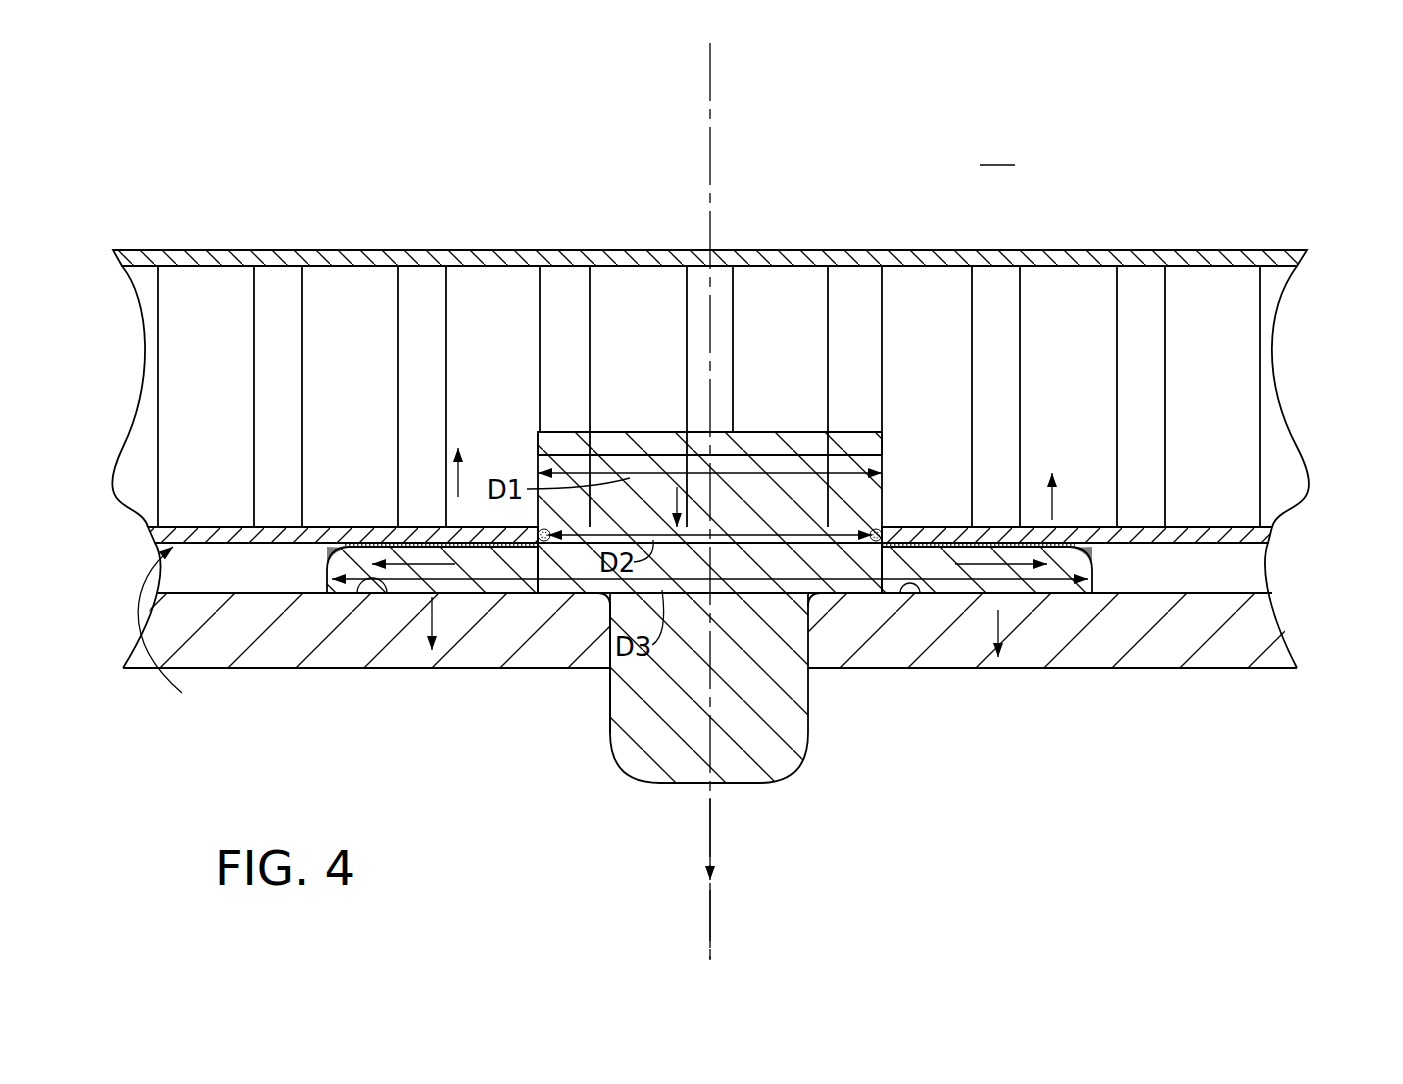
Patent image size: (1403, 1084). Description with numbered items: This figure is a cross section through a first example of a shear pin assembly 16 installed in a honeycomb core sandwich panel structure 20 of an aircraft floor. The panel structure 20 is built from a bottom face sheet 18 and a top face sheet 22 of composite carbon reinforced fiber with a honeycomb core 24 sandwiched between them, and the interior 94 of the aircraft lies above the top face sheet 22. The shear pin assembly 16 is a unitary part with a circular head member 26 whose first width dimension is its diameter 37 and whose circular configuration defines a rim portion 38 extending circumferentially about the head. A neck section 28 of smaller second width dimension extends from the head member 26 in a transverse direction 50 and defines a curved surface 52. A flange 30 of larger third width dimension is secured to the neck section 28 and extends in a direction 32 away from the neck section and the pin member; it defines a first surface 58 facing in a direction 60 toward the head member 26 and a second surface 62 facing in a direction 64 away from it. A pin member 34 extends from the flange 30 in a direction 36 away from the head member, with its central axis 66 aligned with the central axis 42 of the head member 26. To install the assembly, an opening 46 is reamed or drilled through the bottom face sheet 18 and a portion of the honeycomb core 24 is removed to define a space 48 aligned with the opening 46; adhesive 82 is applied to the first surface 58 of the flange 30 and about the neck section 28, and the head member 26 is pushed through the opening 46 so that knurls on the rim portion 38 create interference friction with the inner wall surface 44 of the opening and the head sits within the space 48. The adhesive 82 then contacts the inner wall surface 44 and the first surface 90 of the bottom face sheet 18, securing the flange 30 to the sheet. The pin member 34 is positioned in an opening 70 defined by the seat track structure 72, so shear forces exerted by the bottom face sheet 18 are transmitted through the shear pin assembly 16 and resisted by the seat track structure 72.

The shear pin assembly 16 is at (745, 600).
The bottom face sheet 18 is at (232, 545).
The honeycomb core sandwich panel structure 20 is at (1293, 340).
The top face sheet 22 is at (660, 257).
The honeycomb core 24 is at (353, 345).
The head member 26 is at (737, 443).
The neck section 28 is at (862, 532).
The flange 30 is at (372, 560).
The direction 32 is at (433, 547).
The pin member 34 is at (747, 742).
The direction 36 is at (709, 835).
The diameter 37 is at (645, 448).
The rim portion 38 is at (535, 435).
The central axis 42 is at (710, 144).
The inner wall surface 44 is at (546, 529).
The opening 46 is at (780, 527).
The space 48 is at (890, 455).
The transverse direction 50 is at (680, 520).
The curved surface 52 is at (553, 527).
The first surface 58 is at (382, 550).
The direction 60 is at (456, 490).
The second surface 62 is at (358, 595).
The direction 64 is at (432, 603).
The central axis 66 is at (712, 920).
The opening 70 is at (610, 645).
The seat track structure 72 is at (1085, 648).
The adhesive 82 is at (428, 546).
The first surface 90 is at (1298, 578).
The interior 94 is at (997, 155).